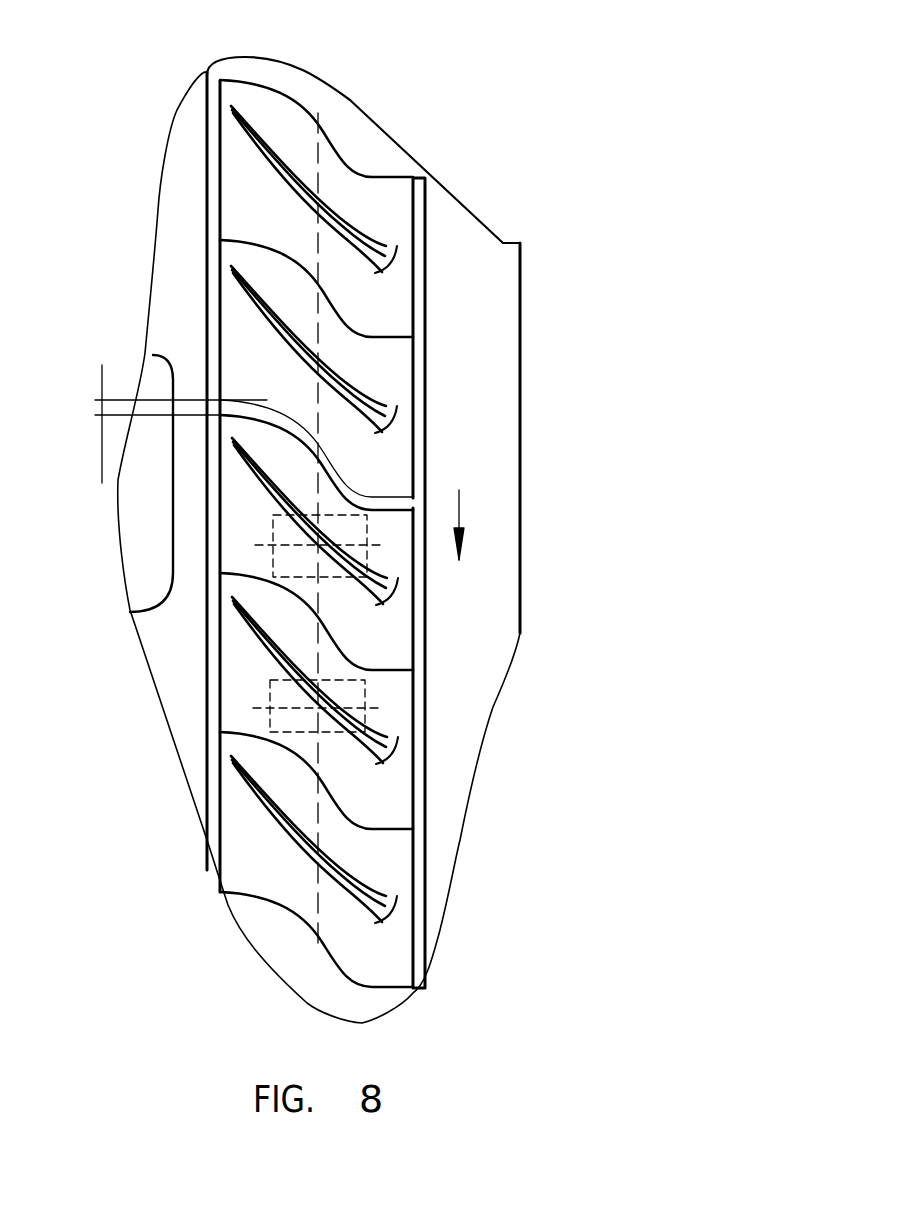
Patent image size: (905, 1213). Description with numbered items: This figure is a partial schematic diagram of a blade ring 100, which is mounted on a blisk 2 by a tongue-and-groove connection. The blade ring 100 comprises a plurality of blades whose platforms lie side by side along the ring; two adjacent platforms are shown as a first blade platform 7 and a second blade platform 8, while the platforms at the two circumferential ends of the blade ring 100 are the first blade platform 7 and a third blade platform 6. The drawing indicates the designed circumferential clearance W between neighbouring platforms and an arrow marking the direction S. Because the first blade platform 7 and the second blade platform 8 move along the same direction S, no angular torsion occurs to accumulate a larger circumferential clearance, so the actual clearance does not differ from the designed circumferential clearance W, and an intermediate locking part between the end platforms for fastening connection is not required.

The blade ring 100 is at (372, 160).
The blisk 2 is at (455, 640).
The third blade platform 6 is at (392, 383).
The first blade platform 7 is at (248, 527).
The second blade platform 8 is at (250, 688).
The designed circumferential clearance W is at (167, 424).
The direction S is at (479, 525).